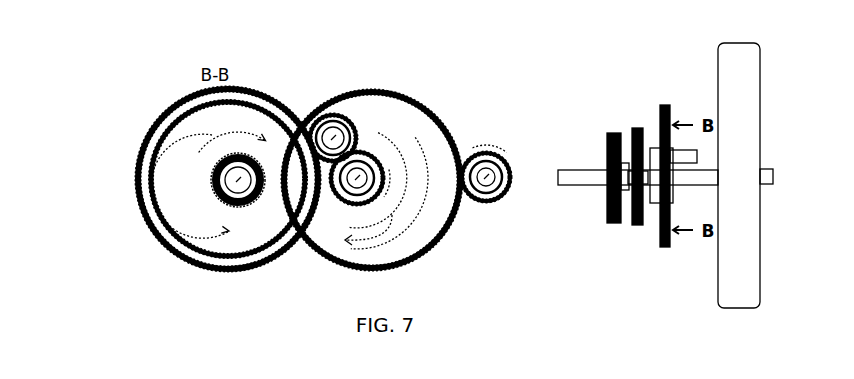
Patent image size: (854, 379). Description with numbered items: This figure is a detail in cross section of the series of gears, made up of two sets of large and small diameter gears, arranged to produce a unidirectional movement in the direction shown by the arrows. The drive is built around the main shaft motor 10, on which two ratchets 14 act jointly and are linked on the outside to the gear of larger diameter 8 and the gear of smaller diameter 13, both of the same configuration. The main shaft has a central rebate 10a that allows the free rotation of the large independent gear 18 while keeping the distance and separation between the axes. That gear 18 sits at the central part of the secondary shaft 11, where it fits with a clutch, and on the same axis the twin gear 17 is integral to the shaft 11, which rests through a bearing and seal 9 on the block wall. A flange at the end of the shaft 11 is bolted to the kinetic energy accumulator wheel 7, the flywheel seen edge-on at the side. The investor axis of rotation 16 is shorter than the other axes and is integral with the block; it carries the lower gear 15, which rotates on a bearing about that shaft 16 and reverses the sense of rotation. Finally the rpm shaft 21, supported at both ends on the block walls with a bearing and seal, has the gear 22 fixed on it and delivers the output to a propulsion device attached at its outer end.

The kinetic energy accumulator wheel 7 is at (740, 85).
The gear of larger diameter 8 is at (178, 112).
The bearing and seal 9 is at (350, 115).
The main shaft motor 10 is at (224, 187).
The central rebate 10a is at (672, 198).
The secondary shaft 11 is at (383, 190).
The gear of smaller diameter 13 is at (153, 137).
The ratchets 14 is at (212, 177).
The lower gear 15 is at (335, 118).
The investor axis of rotation 16 is at (318, 118).
The twin gear 17 is at (383, 185).
The gear of larger diameter 18 is at (404, 110).
The rpm shaft 21 is at (494, 194).
The gear 22 is at (494, 152).